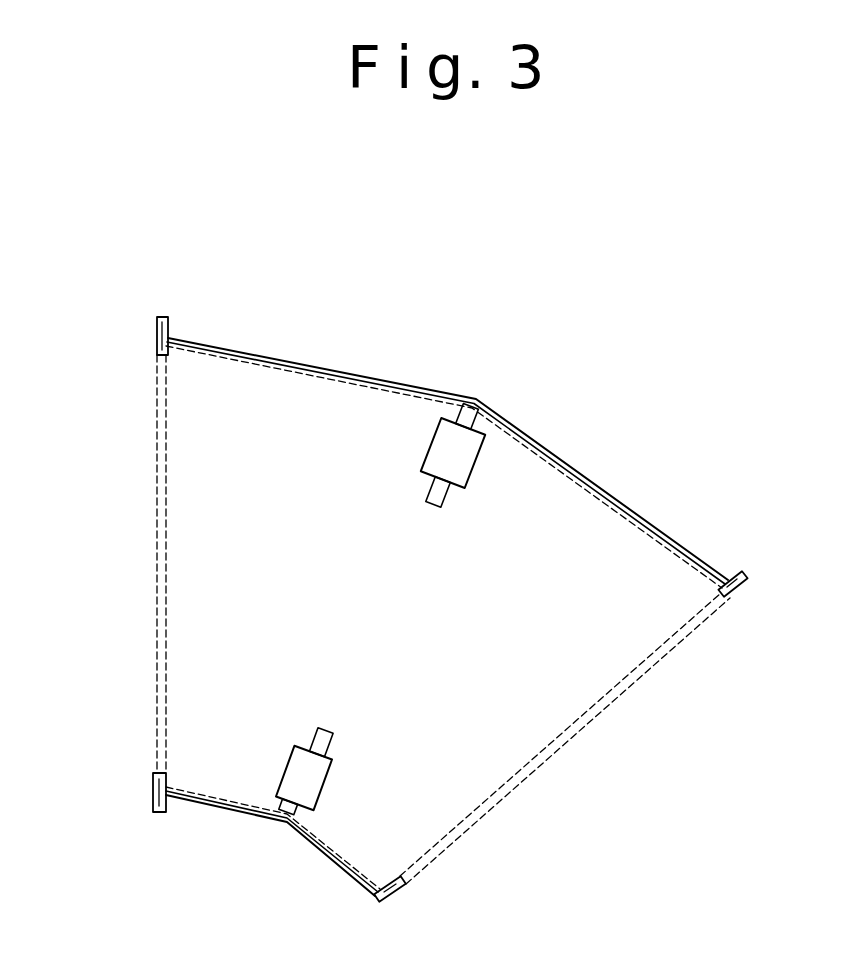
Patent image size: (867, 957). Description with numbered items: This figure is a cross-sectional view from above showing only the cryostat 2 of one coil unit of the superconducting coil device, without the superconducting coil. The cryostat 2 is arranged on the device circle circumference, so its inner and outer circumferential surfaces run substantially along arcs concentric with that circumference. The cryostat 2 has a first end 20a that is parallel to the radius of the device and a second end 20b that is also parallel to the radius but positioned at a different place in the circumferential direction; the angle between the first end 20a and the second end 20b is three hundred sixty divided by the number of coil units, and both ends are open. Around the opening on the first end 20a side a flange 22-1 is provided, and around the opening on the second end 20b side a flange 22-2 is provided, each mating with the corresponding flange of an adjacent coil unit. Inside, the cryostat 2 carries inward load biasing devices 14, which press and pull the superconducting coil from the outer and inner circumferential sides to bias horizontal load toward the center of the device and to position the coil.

The cryostat 2 is at (296, 352).
The inward load biasing device 14 is at (452, 430).
The first end 20a is at (653, 661).
The second end 20b is at (157, 453).
The flange 22-1 is at (737, 570).
The flange 22-2 is at (173, 323).